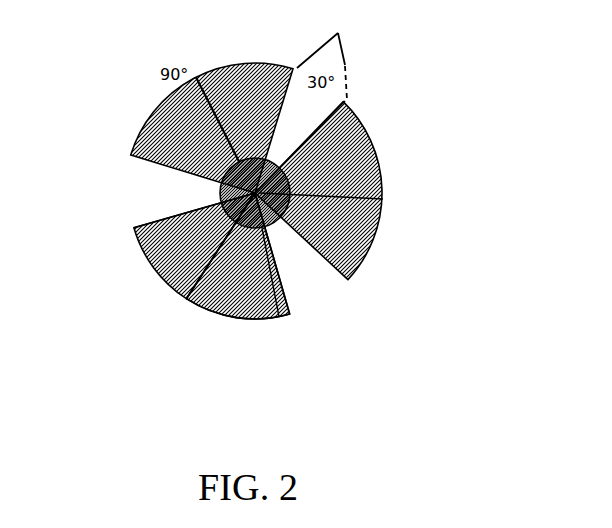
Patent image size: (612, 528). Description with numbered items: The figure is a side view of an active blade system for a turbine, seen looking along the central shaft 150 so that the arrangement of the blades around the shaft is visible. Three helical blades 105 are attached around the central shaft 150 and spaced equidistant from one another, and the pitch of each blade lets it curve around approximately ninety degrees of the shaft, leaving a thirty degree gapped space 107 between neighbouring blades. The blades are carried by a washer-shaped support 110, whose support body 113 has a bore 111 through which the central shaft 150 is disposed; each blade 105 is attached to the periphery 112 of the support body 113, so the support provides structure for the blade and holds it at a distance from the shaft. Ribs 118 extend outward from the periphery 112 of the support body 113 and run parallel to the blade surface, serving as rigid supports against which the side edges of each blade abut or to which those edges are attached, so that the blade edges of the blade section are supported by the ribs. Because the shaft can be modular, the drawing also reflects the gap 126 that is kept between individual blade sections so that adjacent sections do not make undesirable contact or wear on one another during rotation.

The blade 105 is at (292, 62).
The gapped space 107 is at (322, 56).
The support 110 is at (220, 193).
The bore 111 is at (262, 191).
The periphery 112 is at (250, 228).
The support body 113 is at (233, 210).
The ribs 118 is at (347, 103).
The gap 126 is at (189, 298).
The central shaft 150 is at (270, 194).